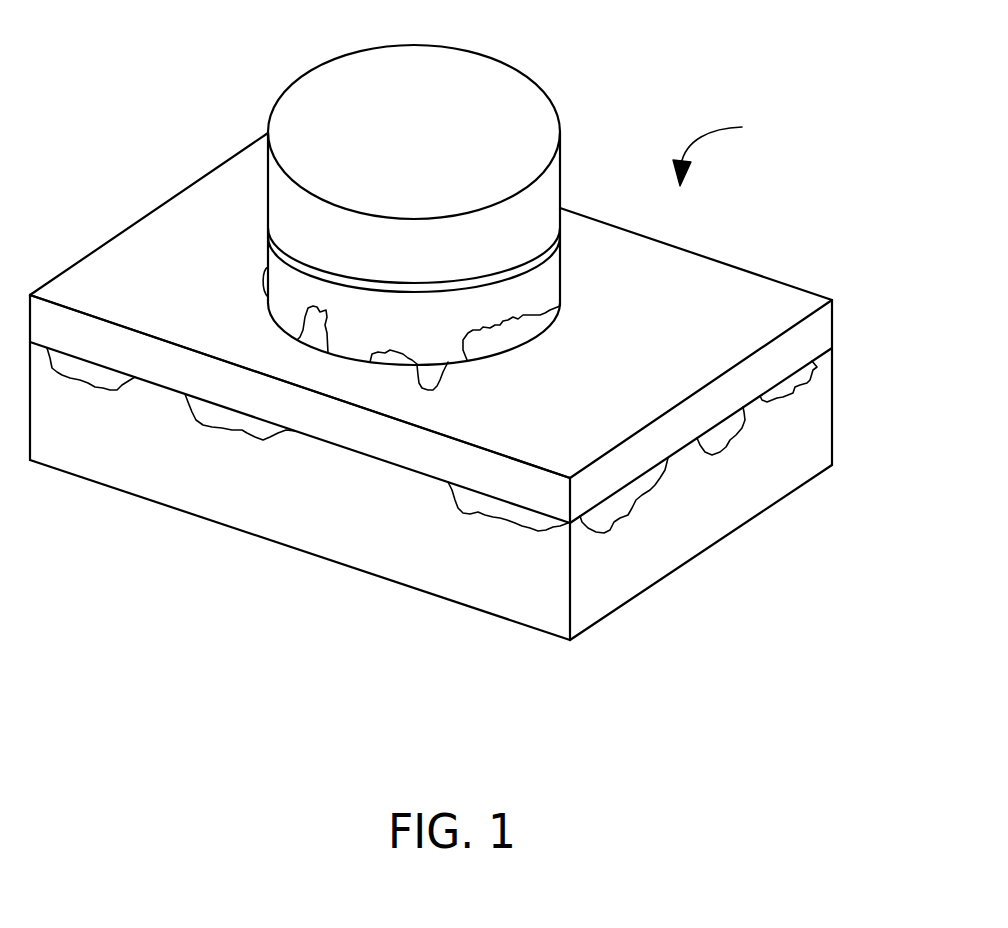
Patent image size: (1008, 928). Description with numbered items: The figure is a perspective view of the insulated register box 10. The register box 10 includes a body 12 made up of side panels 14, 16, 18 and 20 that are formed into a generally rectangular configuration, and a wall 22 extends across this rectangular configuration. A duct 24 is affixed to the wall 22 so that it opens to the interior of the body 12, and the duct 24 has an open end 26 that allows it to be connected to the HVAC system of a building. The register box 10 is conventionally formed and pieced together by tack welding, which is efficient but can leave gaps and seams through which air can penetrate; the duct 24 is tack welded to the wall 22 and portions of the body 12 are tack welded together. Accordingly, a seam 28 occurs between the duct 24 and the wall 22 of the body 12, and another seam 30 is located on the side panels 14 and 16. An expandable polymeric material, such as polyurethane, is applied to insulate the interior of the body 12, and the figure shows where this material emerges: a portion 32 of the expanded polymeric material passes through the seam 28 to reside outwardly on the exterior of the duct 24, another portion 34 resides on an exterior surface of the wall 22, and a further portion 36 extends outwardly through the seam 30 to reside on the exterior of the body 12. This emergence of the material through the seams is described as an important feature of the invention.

The insulated register box 10 is at (724, 150).
The body 12 is at (812, 412).
The side panel 14 is at (678, 552).
The side panel 16 is at (462, 590).
The side panel 18 is at (152, 210).
The side panel 20 is at (715, 258).
The wall 22 is at (722, 341).
The duct 24 is at (540, 210).
The open end 26 is at (535, 78).
The seam 28 is at (523, 342).
The seam 30 is at (372, 458).
The portion of expanded polymeric material 32 is at (537, 302).
The portion of expanded polymeric material 34 is at (452, 378).
The portion of expanded polymeric material 36 is at (245, 432).